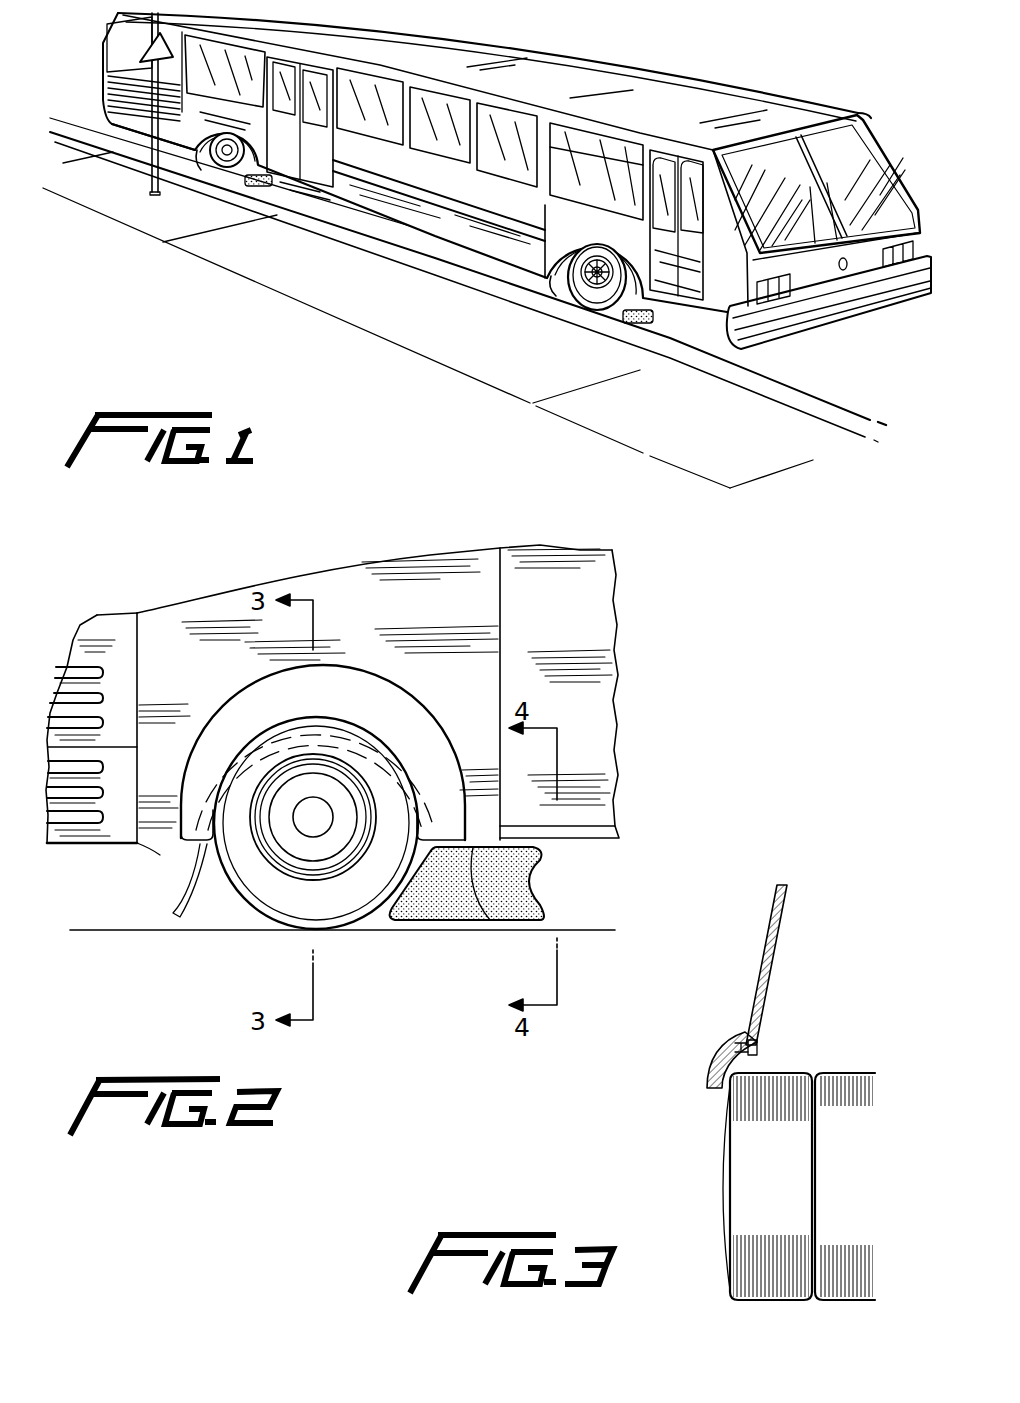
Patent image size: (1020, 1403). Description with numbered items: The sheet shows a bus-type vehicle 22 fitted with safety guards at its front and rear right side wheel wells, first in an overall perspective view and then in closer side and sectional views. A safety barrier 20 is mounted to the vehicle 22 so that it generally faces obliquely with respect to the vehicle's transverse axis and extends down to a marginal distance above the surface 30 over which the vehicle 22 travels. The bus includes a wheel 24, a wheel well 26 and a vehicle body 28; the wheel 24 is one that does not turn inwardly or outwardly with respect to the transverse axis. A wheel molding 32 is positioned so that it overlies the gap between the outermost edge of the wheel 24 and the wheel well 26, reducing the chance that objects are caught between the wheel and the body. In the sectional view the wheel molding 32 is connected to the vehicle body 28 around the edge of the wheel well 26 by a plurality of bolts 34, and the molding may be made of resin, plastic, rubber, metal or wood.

In FIG. 1, the safety barrier 20 is at (252, 187).
In FIG. 2, the safety barrier 20 is at (518, 880).
In FIG. 1, the vehicle 22 is at (416, 232).
In FIG. 2, the wheel 24 is at (273, 890).
In FIG. 3, the wheel 24 is at (742, 1200).
In FIG. 2, the wheel well 26 is at (200, 850).
In FIG. 2, the vehicle body 28 is at (168, 843).
In FIG. 3, the vehicle body 28 is at (750, 987).
In FIG. 2, the surface 30 is at (447, 933).
In FIG. 1, the wheel molding 32 is at (199, 162).
In FIG. 2, the wheel molding 32 is at (225, 705).
In FIG. 3, the wheel molding 32 is at (707, 1080).
In FIG. 3, the bolts 34 is at (758, 1050).